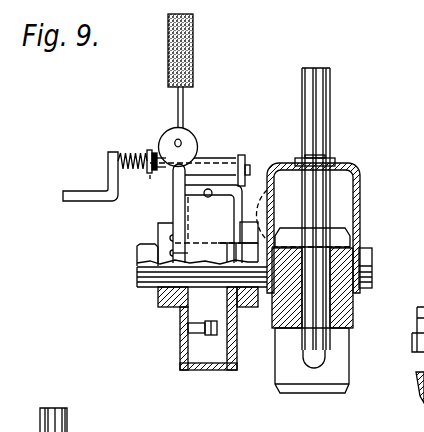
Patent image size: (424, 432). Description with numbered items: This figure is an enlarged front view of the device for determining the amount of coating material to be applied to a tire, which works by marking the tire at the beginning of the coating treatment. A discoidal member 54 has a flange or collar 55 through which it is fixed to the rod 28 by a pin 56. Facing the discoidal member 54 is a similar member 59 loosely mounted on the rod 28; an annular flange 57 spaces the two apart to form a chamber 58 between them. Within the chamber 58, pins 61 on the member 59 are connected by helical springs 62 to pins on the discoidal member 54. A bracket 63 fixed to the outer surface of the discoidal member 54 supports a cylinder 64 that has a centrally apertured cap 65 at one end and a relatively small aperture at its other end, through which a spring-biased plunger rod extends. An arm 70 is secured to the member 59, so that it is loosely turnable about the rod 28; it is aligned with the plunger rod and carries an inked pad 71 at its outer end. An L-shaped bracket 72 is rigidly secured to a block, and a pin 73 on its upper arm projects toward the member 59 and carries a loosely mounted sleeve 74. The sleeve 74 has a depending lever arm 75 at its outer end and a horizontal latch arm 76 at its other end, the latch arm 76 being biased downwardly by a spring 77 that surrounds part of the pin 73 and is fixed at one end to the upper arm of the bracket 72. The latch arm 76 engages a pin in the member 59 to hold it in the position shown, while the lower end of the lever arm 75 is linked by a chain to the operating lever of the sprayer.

The inked pad 71 is at (196, 34).
The arm 70 is at (177, 98).
The centrally apertured cap 65 is at (188, 134).
The spring 77 is at (133, 151).
The sleeve 74 is at (240, 156).
The lever arm 75 is at (250, 170).
The pin 73 is at (146, 172).
The bracket 72 is at (84, 202).
The latch arm 76 is at (150, 176).
The cylinder 64 is at (166, 180).
The pin 56 is at (257, 205).
The bracket 63 is at (219, 197).
The rod 28 is at (138, 256).
The member 59 is at (180, 309).
The pins 61 is at (192, 322).
The chamber 58 is at (195, 340).
The helical springs 62 is at (210, 335).
The flange or collar 55 is at (249, 308).
The discoidal member 54 is at (236, 353).
The annular flange 57 is at (210, 372).